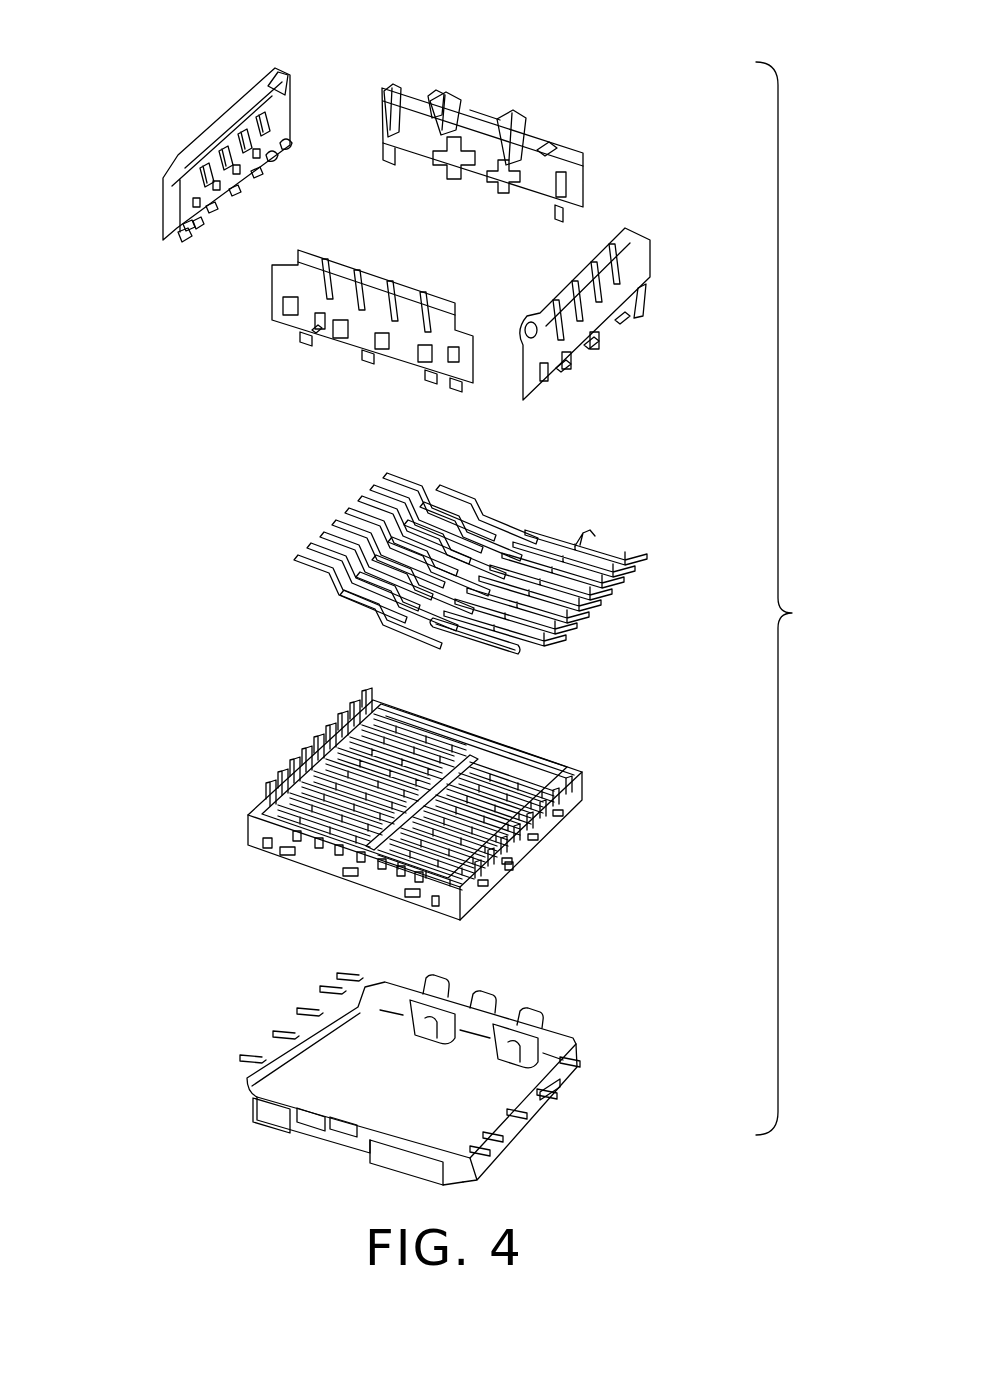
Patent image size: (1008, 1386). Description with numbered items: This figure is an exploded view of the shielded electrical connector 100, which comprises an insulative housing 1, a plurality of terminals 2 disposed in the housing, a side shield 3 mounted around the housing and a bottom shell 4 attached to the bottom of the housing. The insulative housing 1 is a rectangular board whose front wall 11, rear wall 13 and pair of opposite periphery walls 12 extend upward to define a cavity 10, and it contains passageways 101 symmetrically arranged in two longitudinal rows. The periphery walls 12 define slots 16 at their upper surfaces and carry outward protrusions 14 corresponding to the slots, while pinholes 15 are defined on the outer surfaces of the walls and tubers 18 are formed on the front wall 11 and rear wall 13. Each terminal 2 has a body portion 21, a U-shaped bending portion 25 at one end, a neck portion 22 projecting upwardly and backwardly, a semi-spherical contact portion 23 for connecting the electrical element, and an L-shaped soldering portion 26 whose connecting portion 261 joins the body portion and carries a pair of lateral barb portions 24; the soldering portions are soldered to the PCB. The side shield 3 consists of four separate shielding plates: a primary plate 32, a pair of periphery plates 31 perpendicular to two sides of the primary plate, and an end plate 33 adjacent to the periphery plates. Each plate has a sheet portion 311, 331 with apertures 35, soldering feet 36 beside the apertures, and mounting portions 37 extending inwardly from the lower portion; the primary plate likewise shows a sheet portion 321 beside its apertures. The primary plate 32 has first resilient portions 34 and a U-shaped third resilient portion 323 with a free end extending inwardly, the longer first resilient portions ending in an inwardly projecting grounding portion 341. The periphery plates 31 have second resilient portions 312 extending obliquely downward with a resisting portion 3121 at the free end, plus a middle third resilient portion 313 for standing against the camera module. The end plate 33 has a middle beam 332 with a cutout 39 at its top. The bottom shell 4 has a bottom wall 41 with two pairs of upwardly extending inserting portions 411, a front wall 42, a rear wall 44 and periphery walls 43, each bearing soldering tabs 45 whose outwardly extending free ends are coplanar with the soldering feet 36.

The shielded electrical connector 100 is at (808, 598).
The insulative housing 1 is at (603, 757).
The cavity 10 is at (377, 715).
The passageways 101 is at (500, 777).
The front wall 11 is at (378, 883).
The periphery walls 12 is at (548, 837).
The rear wall 13 is at (477, 732).
The protrusions 14 is at (567, 793).
The pinholes 15 is at (265, 855).
The slots 16 is at (333, 740).
The tubers 18 is at (317, 850).
The terminals 2 is at (662, 525).
The body portion 21 is at (585, 557).
The neck portion 22 is at (380, 602).
The contact portion 23 is at (380, 497).
The barb portions 24 is at (507, 657).
The bending portion 25 is at (417, 608).
The soldering portion 26 is at (337, 571).
The connecting portion 261 is at (333, 590).
The side shield 3 is at (660, 150).
The periphery plates 31 is at (385, 235).
The sheet portion 311 is at (170, 200).
The second resilient portions 312 is at (270, 70).
The resisting portion 3121 is at (287, 80).
The third resilient portion 313 is at (233, 112).
The primary plate 32 is at (344, 358).
The openings 321 is at (403, 370).
The third resilient portion 323 is at (390, 283).
The end plate 33 is at (476, 116).
The sheet portion 331 is at (382, 178).
The beam 332 is at (433, 90).
The first resilient portions 34 is at (253, 95).
The grounding portion 341 is at (533, 117).
The apertures 35 is at (200, 230).
The soldering feet 36 is at (630, 323).
The mounting portions 37 is at (277, 145).
The cutout 39 is at (485, 110).
The bottom shell 4 is at (588, 1028).
The bottom wall 41 is at (337, 1068).
The inserting portions 411 is at (507, 1037).
The front wall 42 is at (343, 1145).
The periphery walls 43 is at (517, 1130).
The rear wall 44 is at (582, 1068).
The soldering tabs 45 is at (290, 1110).